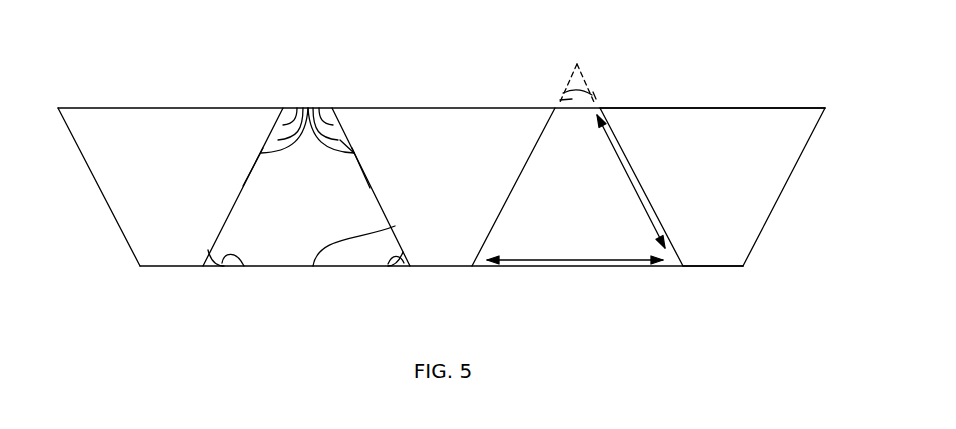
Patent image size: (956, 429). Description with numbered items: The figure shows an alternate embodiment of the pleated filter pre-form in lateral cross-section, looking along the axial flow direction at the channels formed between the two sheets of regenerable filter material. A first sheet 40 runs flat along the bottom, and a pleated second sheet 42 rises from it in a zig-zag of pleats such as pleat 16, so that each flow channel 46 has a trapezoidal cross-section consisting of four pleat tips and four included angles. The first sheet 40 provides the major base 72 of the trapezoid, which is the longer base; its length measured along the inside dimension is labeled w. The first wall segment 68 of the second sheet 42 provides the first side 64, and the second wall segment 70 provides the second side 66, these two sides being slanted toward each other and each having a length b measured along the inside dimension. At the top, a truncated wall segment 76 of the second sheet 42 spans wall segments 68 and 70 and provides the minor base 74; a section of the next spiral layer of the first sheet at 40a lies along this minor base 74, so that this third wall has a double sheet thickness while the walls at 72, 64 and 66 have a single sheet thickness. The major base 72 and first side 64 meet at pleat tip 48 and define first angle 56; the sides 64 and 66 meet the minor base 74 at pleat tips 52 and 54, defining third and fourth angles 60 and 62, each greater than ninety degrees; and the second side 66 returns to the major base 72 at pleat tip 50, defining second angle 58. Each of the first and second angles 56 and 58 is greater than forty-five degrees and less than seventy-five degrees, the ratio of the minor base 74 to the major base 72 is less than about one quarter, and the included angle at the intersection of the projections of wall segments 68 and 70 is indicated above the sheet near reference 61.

The pleat 16 is at (210, 221).
The flow channel 46 is at (298, 195).
The first wall segment 68 is at (243, 186).
The second wall segment 70 is at (370, 188).
The first side 64 is at (252, 170).
The second side 66 is at (360, 170).
The major base 72 is at (395, 226).
The pleat tip 48 is at (203, 266).
The first angle 56 is at (244, 266).
The pleat tip 50 is at (410, 266).
The second angle 58 is at (388, 264).
The pleat tip 52 is at (286, 108).
The third angle 60 is at (281, 127).
The truncated wall segment 76 is at (266, 153).
The pleat tip 54 is at (330, 108).
The fourth angle 62 is at (334, 128).
The minor base 74 is at (352, 153).
The gap angle 61 is at (568, 100).
The major base length w is at (557, 258).
The side length b is at (630, 185).
The first sheet 40 is at (709, 266).
The section of next layer of first sheet 40a is at (744, 107).
The second sheet 42 is at (786, 190).